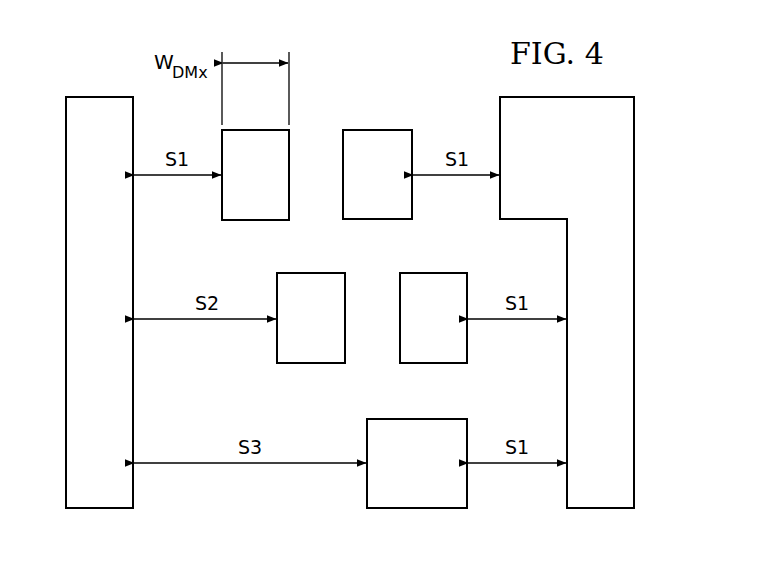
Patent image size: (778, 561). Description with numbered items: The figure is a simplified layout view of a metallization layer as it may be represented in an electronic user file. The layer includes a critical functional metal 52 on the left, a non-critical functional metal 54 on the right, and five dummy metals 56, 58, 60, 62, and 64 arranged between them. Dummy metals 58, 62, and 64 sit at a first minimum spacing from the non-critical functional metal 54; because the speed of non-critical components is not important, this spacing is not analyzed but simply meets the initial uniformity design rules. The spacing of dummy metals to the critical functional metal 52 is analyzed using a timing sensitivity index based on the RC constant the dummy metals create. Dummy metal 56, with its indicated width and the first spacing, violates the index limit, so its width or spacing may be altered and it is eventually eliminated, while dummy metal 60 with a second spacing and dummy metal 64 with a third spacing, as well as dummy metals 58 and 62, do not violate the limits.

The critical functional metal 52 is at (115, 317).
The non-critical functional metal 54 is at (585, 317).
The dummy metal 56 is at (220, 198).
The dummy metal 58 is at (377, 130).
The dummy metal 60 is at (276, 341).
The dummy metal 62 is at (468, 341).
The dummy metal 64 is at (468, 486).